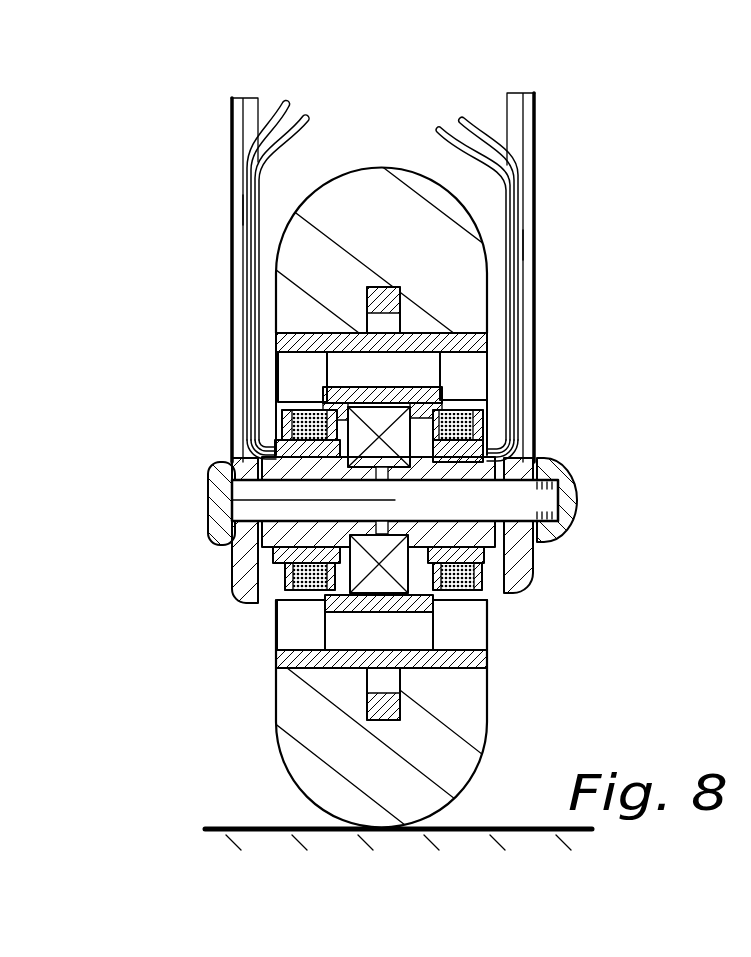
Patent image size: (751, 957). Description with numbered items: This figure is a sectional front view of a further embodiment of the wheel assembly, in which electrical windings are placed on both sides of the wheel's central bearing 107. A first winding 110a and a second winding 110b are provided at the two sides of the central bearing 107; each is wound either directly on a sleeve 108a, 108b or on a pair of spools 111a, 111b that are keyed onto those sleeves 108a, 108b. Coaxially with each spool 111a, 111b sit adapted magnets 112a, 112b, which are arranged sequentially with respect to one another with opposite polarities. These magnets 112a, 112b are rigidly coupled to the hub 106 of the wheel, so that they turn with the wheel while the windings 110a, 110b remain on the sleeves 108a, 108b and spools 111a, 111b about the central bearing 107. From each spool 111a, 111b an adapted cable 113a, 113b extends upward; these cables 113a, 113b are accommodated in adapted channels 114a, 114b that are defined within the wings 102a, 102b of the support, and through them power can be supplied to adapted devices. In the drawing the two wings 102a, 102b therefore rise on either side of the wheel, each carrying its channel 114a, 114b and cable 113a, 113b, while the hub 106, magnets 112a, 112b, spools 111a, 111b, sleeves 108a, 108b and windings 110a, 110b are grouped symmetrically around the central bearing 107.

The wing 102a is at (510, 132).
The wing 102b is at (233, 130).
The hub 106 is at (452, 312).
The central bearing 107 is at (380, 580).
The sleeve 108a is at (522, 538).
The sleeve 108b is at (243, 562).
The winding 110a is at (460, 400).
The winding 110b is at (310, 411).
The spool 111a is at (483, 587).
The spool 111b is at (288, 575).
The magnet 112a is at (464, 369).
The magnet 112b is at (302, 372).
The cable 113a is at (480, 150).
The cable 113b is at (282, 152).
The channel 114a is at (527, 245).
The channel 114b is at (238, 208).